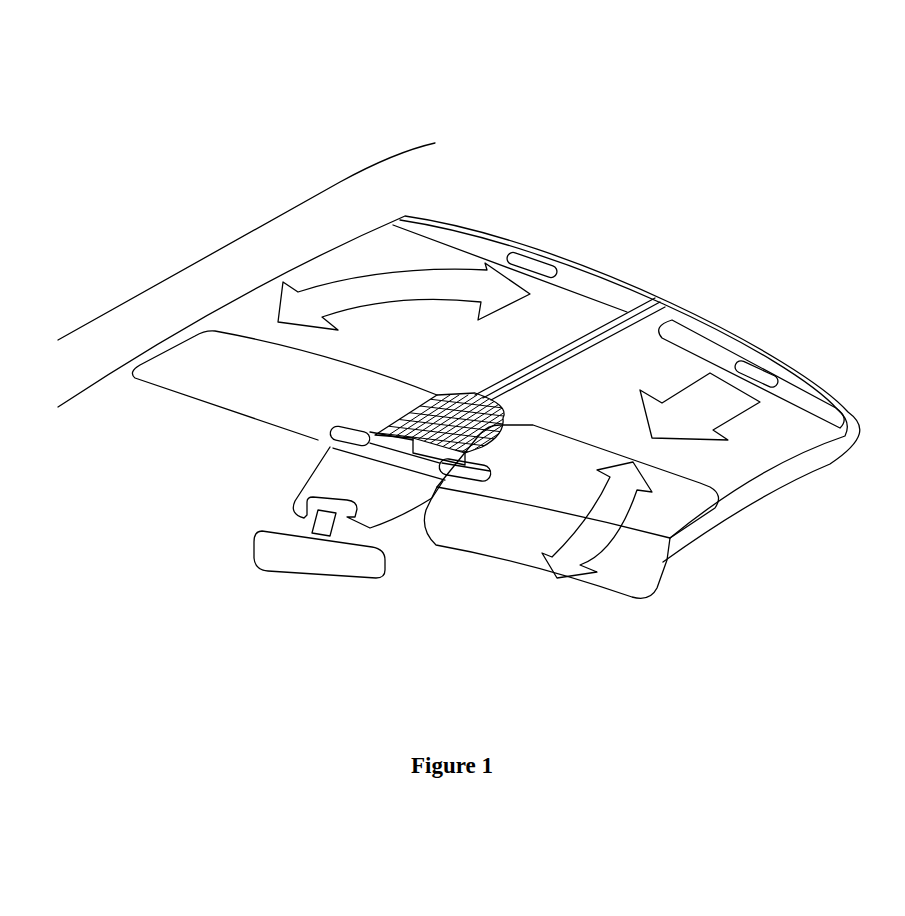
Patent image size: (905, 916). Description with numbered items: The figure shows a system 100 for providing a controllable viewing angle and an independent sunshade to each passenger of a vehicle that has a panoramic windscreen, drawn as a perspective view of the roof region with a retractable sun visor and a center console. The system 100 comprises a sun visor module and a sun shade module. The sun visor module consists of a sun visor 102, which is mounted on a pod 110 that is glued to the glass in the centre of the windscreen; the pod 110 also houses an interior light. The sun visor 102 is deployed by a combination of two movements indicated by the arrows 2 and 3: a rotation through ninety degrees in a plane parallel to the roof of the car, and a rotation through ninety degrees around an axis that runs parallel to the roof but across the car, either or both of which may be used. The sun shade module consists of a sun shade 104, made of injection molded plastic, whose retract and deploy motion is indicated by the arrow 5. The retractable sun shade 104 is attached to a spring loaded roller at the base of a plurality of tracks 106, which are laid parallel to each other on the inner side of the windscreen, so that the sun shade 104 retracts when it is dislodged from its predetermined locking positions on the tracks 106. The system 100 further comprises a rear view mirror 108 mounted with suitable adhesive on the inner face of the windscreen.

The system 100 is at (338, 103).
The sun visor 102 is at (227, 357).
The sun shade 104 is at (477, 238).
The tracks 106 is at (777, 532).
The rear view mirror 108 is at (295, 552).
The pod 110 is at (486, 369).
The direction of motion 2 is at (373, 287).
The direction of motion 3 is at (593, 540).
The motion of sun shade 5 is at (708, 396).